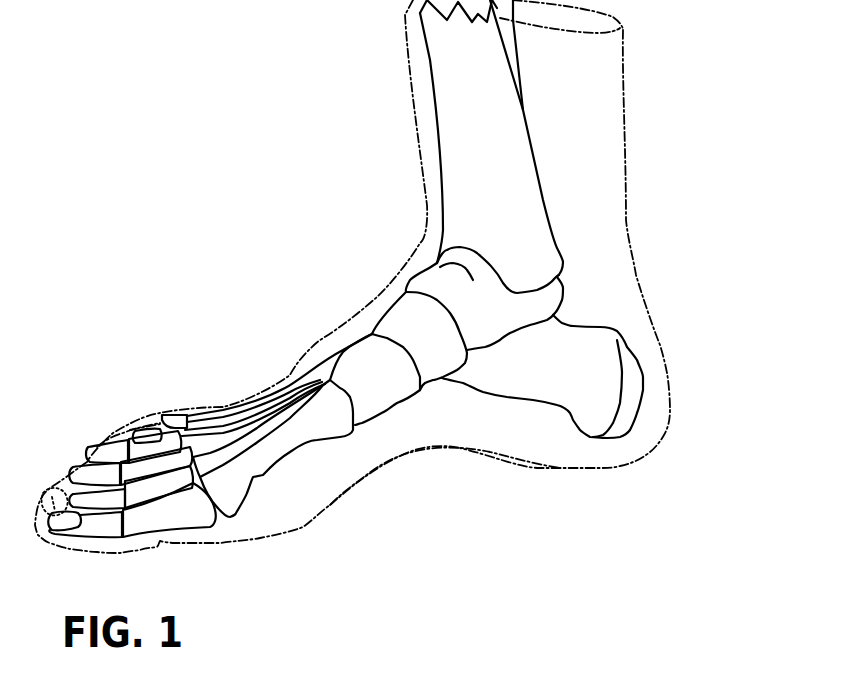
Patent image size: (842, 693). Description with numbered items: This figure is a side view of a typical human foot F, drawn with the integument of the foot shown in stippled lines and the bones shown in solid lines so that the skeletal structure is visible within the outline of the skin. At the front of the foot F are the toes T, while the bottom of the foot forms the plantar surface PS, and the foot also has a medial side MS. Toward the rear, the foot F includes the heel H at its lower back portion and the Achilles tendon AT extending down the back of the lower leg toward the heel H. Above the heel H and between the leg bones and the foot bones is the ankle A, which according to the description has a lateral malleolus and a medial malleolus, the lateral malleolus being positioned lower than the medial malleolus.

The human foot F is at (195, 116).
The ankle A is at (502, 223).
The Achilles tendon AT is at (625, 177).
The toes T is at (147, 482).
The heel H is at (670, 408).
The medial side MS is at (422, 422).
The plantar surface PS is at (527, 465).